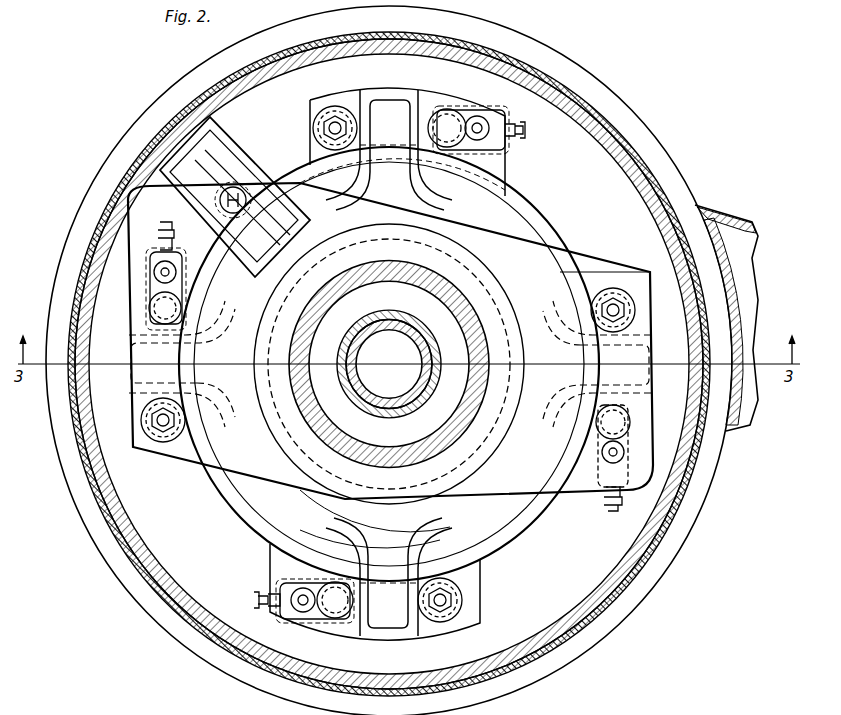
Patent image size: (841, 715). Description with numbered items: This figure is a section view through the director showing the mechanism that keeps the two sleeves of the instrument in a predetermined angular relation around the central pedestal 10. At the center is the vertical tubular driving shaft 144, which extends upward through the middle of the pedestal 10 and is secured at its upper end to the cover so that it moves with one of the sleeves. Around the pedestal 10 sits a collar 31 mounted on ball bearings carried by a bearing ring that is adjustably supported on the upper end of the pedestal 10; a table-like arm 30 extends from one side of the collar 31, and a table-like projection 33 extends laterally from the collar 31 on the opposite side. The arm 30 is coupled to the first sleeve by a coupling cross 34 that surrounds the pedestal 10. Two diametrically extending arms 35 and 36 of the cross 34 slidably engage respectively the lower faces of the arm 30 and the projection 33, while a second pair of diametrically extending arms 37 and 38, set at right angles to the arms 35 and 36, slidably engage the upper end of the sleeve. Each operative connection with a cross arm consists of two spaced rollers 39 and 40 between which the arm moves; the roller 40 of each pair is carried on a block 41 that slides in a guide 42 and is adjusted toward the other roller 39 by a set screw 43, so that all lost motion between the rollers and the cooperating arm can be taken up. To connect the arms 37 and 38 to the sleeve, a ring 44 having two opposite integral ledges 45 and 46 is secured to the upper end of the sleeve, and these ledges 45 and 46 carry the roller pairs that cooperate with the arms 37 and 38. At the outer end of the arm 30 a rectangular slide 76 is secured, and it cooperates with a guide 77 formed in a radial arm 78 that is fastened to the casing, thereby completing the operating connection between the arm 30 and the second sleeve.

The pedestal 10 is at (432, 348).
The vertical tubular driving shaft 144 is at (400, 332).
The collar 31 is at (375, 268).
The arm 30 is at (190, 452).
The projection 33 is at (578, 270).
The coupling cross 34 is at (432, 532).
The arm of coupling cross 35 is at (148, 378).
The arm of coupling cross 36 is at (640, 356).
The arm of coupling cross 37 is at (396, 636).
The arm of coupling cross 38 is at (395, 98).
The roller 39 is at (336, 110).
The roller 40 is at (450, 112).
The block 41 is at (490, 120).
The guide 42 is at (480, 116).
The set screw 43 is at (524, 131).
The ring 44 is at (518, 537).
The ledge 45 is at (470, 578).
The ledge 46 is at (500, 170).
The rectangular slide 76 is at (238, 168).
The guide 77 is at (248, 192).
The radial arm 78 is at (225, 140).